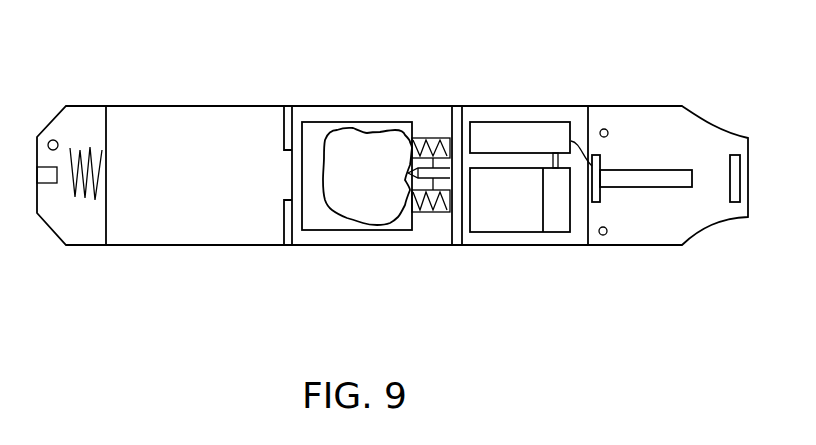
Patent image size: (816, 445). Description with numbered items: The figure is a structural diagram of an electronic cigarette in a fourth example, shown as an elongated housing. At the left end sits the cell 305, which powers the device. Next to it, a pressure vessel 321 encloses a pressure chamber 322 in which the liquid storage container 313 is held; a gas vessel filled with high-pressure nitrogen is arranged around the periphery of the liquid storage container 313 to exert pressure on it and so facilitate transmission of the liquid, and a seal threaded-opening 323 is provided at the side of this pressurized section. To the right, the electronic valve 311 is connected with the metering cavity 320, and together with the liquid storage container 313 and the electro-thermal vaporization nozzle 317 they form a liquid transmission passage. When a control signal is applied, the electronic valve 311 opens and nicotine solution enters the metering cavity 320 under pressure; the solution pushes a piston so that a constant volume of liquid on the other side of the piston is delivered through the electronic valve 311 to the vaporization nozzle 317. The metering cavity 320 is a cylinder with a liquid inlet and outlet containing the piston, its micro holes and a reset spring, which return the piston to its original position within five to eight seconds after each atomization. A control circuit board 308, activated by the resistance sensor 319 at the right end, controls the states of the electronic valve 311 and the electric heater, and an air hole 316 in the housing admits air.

The cell 305 is at (392, 220).
The control circuit board 308 is at (520, 237).
The electronic valve 311 is at (531, 104).
The liquid storage container 313 is at (367, 132).
The air hole 316 is at (610, 137).
The electro-thermal vaporization nozzle 317 is at (649, 121).
The resistance sensor 319 is at (749, 246).
The metering cavity 320 is at (585, 236).
The pressure vessel 321 is at (247, 220).
The pressure chamber 322 is at (342, 228).
The seal threaded-opening 323 is at (411, 236).